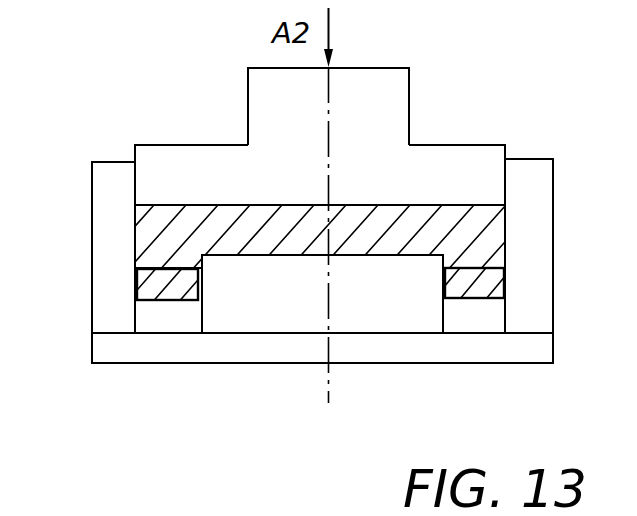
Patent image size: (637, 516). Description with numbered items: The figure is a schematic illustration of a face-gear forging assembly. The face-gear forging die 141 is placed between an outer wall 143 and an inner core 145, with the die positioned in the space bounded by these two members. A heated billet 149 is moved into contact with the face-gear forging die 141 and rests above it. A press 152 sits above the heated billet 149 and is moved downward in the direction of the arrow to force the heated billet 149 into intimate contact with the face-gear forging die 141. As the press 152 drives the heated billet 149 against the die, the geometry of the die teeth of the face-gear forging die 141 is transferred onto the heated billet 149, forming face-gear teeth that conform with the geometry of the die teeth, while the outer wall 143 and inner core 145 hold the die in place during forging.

The press 152 is at (375, 66).
The heated billet 149 is at (475, 222).
The outer wall 143 is at (103, 180).
The face-gear forging die 141 is at (163, 323).
The inner core 145 is at (375, 310).